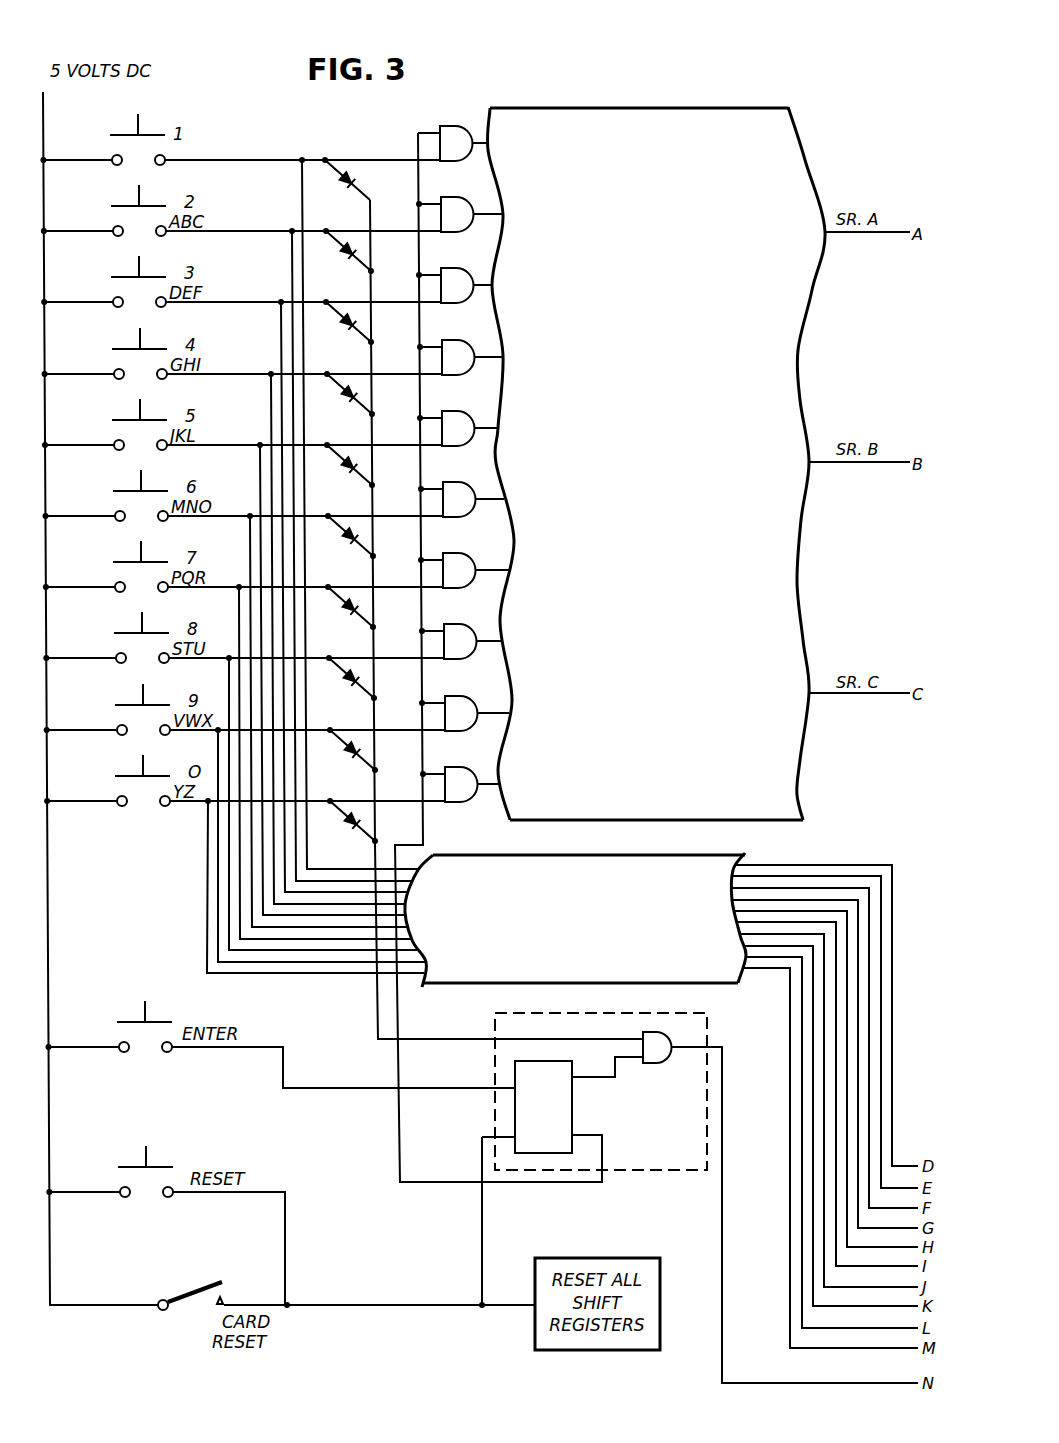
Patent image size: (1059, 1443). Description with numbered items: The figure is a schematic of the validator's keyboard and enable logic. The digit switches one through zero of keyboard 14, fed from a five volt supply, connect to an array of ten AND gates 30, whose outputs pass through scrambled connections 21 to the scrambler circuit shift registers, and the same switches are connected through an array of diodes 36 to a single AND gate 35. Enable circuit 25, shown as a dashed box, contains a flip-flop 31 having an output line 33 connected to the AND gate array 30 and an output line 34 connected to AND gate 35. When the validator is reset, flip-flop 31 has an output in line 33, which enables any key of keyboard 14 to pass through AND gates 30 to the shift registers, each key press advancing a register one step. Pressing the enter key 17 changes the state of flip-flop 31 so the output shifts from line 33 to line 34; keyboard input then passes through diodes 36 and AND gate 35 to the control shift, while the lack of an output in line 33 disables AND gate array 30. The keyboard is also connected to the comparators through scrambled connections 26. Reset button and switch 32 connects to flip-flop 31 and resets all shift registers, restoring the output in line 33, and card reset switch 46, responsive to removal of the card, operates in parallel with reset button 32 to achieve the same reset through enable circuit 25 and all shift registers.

The keyboard 14 is at (168, 119).
The AND gates 30 is at (456, 117).
The diodes 36 is at (353, 148).
The scrambled connections 21 is at (803, 551).
The scrambled connections 26 is at (742, 856).
The enter key 17 is at (163, 1015).
The reset button and switch 32 is at (165, 1163).
The card reset switch 46 is at (200, 1290).
The AND gate 35 is at (680, 1035).
The output line 34 is at (596, 1076).
The flip-flop 31 is at (572, 1105).
The output line 33 is at (600, 1135).
The enable circuit 25 is at (678, 1173).